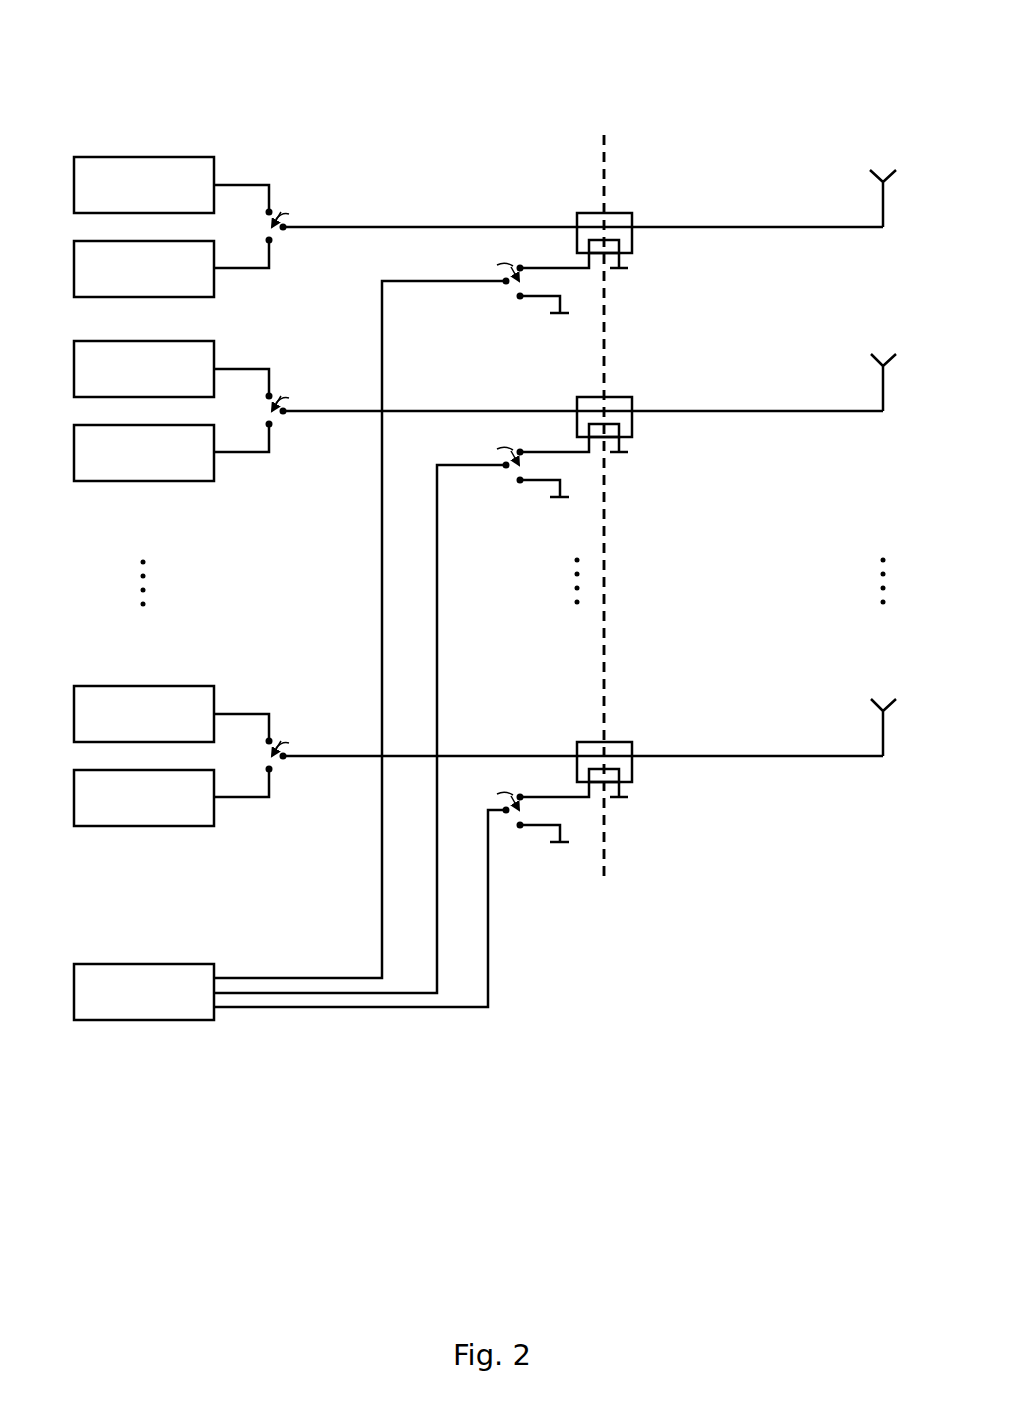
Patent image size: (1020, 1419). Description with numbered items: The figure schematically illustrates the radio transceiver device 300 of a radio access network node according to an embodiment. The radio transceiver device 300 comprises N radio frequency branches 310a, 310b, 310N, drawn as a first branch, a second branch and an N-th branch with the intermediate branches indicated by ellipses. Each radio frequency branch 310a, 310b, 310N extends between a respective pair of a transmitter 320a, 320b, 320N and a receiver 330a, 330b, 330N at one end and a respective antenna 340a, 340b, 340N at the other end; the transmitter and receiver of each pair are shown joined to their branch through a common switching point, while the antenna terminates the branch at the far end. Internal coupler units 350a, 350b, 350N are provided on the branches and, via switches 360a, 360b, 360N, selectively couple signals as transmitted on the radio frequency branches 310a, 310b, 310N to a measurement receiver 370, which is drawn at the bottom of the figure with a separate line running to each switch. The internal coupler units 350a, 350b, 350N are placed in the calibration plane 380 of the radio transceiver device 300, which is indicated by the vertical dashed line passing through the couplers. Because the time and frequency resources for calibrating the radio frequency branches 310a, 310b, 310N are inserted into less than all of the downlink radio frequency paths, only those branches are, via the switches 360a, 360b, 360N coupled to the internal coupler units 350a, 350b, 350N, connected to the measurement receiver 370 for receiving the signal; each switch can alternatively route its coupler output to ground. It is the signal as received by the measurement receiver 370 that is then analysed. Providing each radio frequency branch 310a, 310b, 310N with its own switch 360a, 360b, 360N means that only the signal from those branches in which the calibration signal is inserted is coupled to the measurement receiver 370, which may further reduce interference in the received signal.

The radio transceiver device 300 is at (662, 45).
The radio frequency branch 310a is at (373, 226).
The radio frequency branch 310b is at (456, 410).
The radio frequency branch 310N is at (495, 755).
The transmitter 320a is at (183, 162).
The transmitter 320b is at (188, 354).
The transmitter 320N is at (184, 692).
The receiver 330a is at (168, 288).
The receiver 330b is at (174, 482).
The receiver 330N is at (170, 828).
The antenna 340a is at (880, 188).
The antenna 340b is at (880, 383).
The antenna 340N is at (878, 728).
The internal coupler unit 350a is at (628, 212).
The internal coupler unit 350b is at (628, 396).
The internal coupler unit 350N is at (632, 741).
The switch 360a is at (498, 286).
The switch 360b is at (506, 480).
The switch 360N is at (508, 824).
The measurement receiver 370 is at (133, 1022).
The calibration plane 380 is at (605, 630).